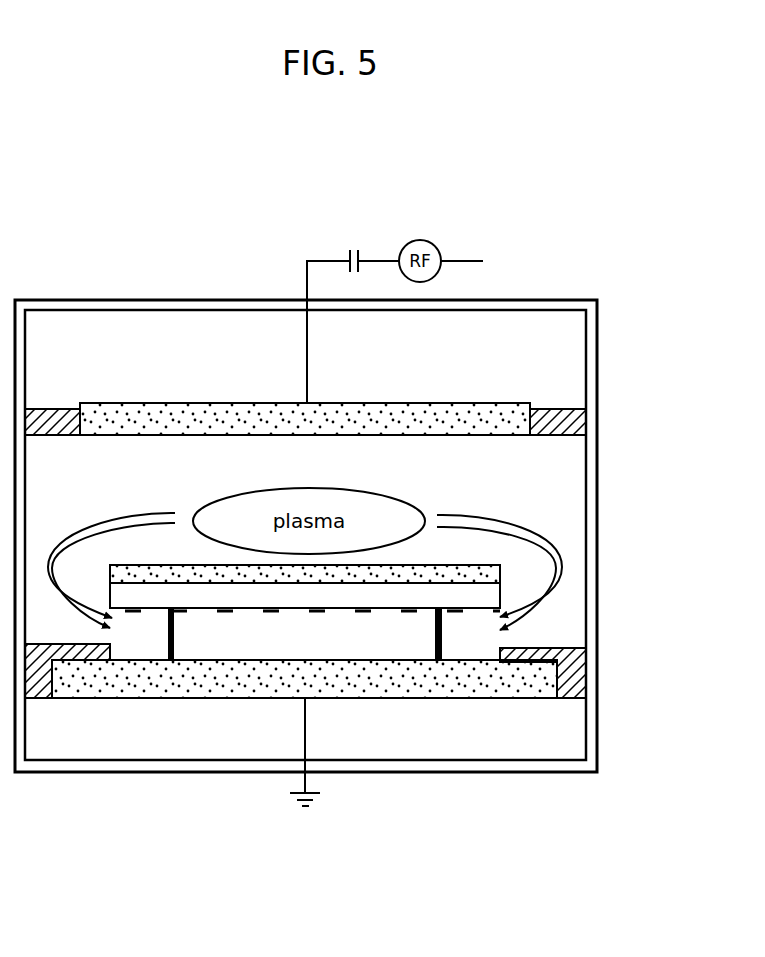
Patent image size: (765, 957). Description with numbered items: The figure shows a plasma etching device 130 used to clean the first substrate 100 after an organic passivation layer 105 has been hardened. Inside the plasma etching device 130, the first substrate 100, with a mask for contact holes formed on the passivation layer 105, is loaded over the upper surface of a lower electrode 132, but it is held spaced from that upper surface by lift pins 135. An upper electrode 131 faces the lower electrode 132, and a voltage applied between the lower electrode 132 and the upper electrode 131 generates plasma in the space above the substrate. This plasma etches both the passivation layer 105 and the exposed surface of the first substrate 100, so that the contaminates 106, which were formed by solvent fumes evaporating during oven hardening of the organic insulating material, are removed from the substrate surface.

The plasma etching device 130 is at (77, 300).
The upper electrode 131 is at (513, 433).
The lower electrode 132 is at (507, 690).
The organic passivation layer 105 is at (500, 577).
The first substrate 100 is at (500, 597).
The lift pins 135 is at (174, 638).
The contaminates 106 is at (410, 612).